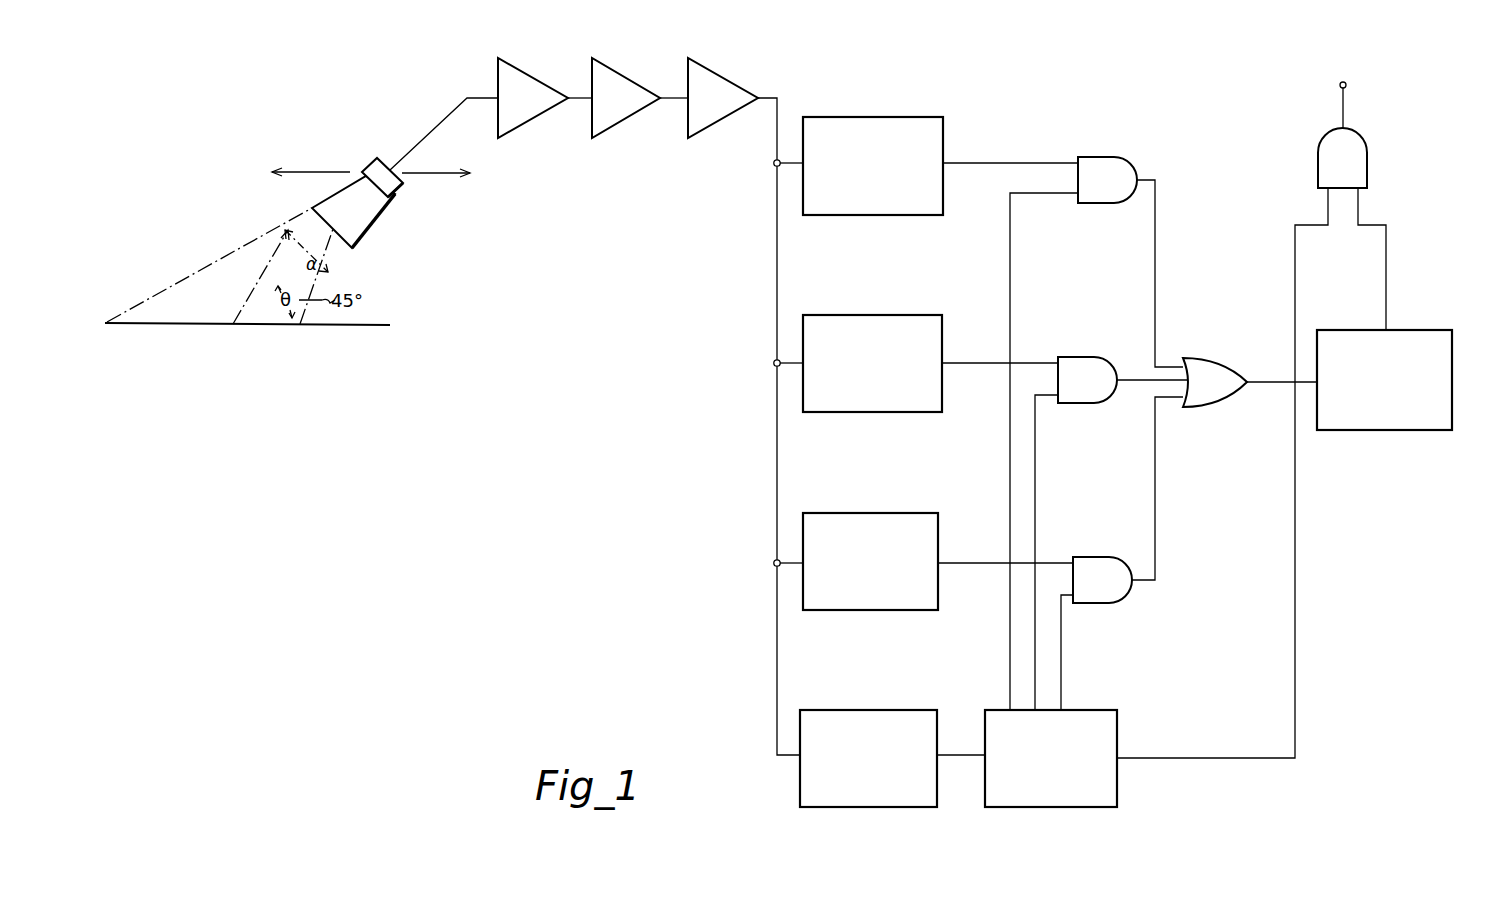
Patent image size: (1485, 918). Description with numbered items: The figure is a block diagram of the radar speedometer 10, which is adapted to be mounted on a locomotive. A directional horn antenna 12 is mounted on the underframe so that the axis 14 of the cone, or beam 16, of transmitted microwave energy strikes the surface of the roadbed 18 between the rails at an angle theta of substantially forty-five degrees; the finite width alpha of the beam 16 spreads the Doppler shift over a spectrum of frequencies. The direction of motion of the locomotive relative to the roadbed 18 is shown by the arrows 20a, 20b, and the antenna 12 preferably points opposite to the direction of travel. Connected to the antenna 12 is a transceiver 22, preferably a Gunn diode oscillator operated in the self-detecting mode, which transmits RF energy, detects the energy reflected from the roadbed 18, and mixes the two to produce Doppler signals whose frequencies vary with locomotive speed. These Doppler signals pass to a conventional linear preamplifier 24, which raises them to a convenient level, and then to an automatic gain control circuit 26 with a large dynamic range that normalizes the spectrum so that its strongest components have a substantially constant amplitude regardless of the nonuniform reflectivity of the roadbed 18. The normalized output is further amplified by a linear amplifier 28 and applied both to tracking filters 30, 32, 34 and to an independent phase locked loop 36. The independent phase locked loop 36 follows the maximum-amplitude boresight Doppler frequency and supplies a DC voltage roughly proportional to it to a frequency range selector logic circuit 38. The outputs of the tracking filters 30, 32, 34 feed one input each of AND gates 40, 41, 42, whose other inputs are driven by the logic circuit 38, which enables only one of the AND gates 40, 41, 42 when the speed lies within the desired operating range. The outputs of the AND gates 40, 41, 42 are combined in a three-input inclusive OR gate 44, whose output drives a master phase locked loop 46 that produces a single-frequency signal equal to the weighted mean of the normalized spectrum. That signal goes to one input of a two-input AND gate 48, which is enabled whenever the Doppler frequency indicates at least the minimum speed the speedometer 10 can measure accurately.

The radar speedometer 10 is at (610, 412).
The directional horn antenna 12 is at (335, 194).
The axis 14 is at (246, 310).
The beam 16 is at (250, 242).
The roadbed 18 is at (383, 323).
The arrow 20a is at (340, 135).
The arrow 20b is at (447, 173).
The transceiver 22 is at (392, 199).
The linear preamplifier 24 is at (557, 37).
The automatic gain control circuit 26 is at (657, 38).
The linear amplifier 28 is at (763, 38).
The tracking filter 30 is at (902, 117).
The tracking filter 32 is at (902, 315).
The tracking filter 34 is at (878, 513).
The independent phase locked loop 36 is at (865, 710).
The frequency range selector logic circuit 38 is at (1125, 675).
The AND gate 40 is at (1110, 157).
The AND gate 41 is at (1077, 357).
The AND gate 42 is at (1080, 557).
The inclusive OR gate 44 is at (1247, 335).
The master phase locked loop 46 is at (1442, 303).
The AND gate 48 is at (1365, 142).